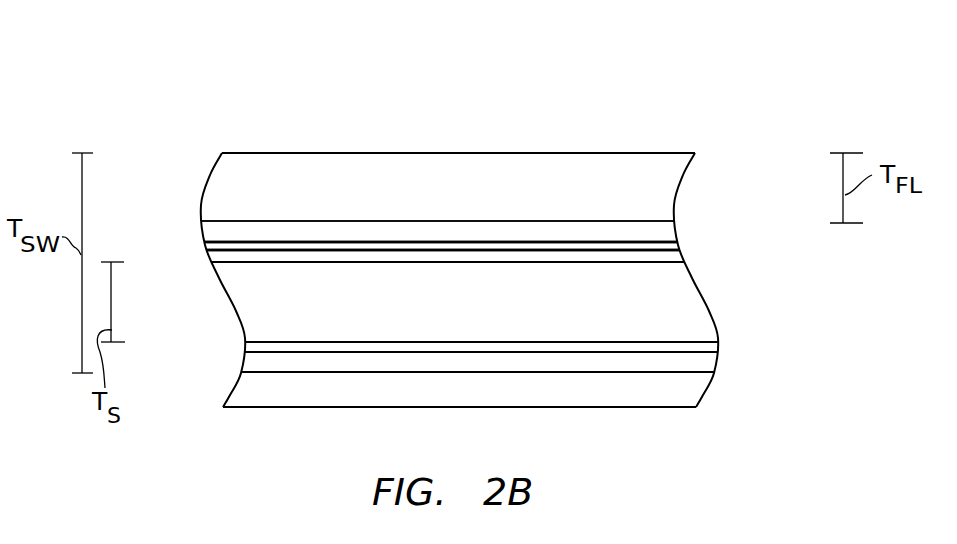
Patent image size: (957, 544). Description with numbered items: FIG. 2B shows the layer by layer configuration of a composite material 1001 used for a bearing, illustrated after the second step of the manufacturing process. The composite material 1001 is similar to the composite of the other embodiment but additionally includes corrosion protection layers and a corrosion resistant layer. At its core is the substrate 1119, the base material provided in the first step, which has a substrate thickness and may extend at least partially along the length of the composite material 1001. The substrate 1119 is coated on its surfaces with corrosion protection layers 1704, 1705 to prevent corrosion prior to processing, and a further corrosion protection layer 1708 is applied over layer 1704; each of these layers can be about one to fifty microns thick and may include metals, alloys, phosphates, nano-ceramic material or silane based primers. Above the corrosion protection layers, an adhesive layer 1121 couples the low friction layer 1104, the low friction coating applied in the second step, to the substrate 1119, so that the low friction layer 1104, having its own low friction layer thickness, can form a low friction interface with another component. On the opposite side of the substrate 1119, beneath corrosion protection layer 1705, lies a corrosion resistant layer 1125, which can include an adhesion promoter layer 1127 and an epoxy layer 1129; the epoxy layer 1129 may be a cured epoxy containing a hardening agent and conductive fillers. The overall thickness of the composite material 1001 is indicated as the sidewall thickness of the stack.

The composite material 1001 is at (806, 106).
The low friction layer 1104 is at (205, 188).
The adhesive layer 1121 is at (203, 234).
The corrosion protection layer 1708 is at (680, 243).
The corrosion protection layer 1704 is at (682, 256).
The substrate 1119 is at (228, 286).
The corrosion protection layer 1705 is at (718, 345).
The adhesion promoter layer 1127 is at (243, 362).
The epoxy layer 1129 is at (230, 397).
The corrosion resistant layer 1125 is at (725, 352).